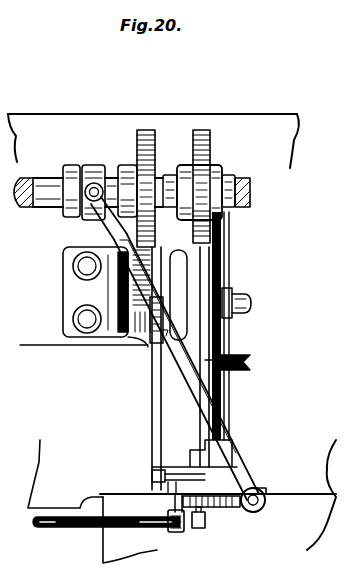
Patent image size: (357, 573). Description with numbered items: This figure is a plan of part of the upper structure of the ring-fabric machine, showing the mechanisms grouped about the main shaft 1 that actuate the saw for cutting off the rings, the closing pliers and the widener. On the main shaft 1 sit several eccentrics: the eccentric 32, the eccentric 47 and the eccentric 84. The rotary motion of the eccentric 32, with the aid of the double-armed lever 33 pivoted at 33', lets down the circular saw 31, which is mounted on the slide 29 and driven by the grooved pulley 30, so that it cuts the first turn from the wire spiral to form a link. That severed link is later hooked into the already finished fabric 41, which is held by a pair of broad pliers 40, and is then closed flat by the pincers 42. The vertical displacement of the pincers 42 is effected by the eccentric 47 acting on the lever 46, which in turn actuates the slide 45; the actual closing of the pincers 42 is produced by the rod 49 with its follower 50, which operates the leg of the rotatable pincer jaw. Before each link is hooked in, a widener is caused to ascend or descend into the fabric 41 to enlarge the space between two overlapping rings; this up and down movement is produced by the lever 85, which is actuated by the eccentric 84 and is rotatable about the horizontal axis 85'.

The main shaft 1 is at (53, 208).
The eccentric 84 is at (94, 176).
The eccentric 47 is at (145, 178).
The pliers 40 is at (160, 176).
The eccentric 32 is at (206, 176).
The double-armed lever 33 is at (248, 199).
The lever 46 is at (110, 298).
The pivot 33' is at (265, 306).
The lever 85 is at (175, 348).
The horizontal axis 85' is at (200, 324).
The grooved pulley 30 is at (250, 361).
The slide 29 is at (216, 415).
The circular saw 31 is at (243, 452).
The fabric 41 is at (230, 494).
The slide 45 is at (172, 483).
The pincers 42 is at (206, 508).
The rod 49 is at (54, 527).
The follower 50 is at (187, 530).